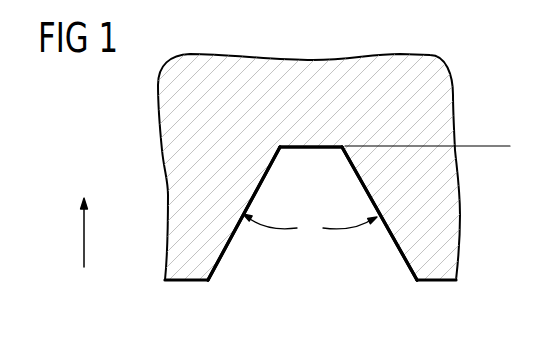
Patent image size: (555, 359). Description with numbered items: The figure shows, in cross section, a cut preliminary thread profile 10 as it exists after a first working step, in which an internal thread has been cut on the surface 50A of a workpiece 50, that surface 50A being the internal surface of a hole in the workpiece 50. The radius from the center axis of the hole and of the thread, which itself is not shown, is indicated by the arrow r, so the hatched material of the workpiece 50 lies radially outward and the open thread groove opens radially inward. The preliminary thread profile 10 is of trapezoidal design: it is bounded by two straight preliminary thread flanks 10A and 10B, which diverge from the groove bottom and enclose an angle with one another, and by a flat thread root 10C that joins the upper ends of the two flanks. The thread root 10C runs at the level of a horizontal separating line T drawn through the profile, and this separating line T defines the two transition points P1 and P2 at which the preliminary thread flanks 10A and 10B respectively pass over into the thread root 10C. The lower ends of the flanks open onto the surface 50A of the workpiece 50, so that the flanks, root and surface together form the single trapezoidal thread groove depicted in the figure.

The preliminary thread profile 10 is at (253, 190).
The first flank of groove 10A is at (227, 245).
The second flank of groove 10B is at (395, 245).
The groove bottom 10C is at (308, 145).
The workpiece 50 is at (438, 101).
The surface of the workpiece 50A is at (438, 281).
The transition point P1 is at (279, 146).
The transition point P2 is at (343, 146).
The separating line T is at (487, 147).
The radius r is at (83, 243).